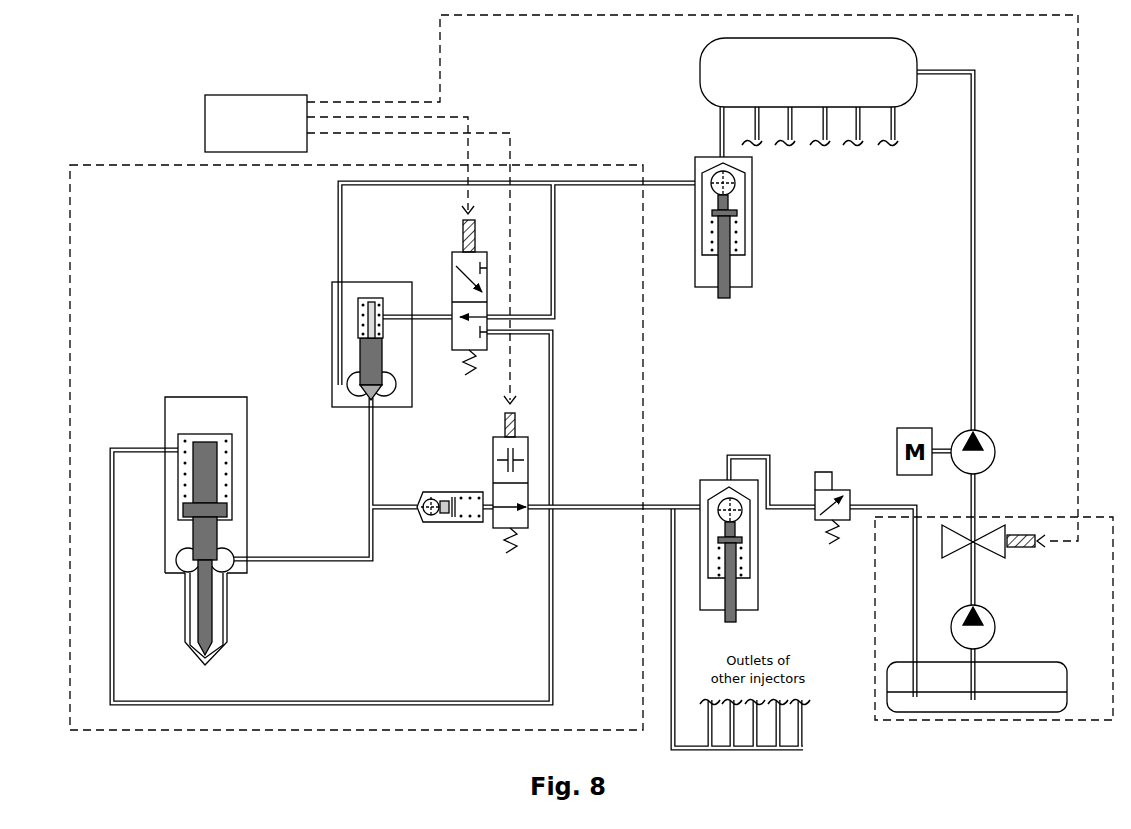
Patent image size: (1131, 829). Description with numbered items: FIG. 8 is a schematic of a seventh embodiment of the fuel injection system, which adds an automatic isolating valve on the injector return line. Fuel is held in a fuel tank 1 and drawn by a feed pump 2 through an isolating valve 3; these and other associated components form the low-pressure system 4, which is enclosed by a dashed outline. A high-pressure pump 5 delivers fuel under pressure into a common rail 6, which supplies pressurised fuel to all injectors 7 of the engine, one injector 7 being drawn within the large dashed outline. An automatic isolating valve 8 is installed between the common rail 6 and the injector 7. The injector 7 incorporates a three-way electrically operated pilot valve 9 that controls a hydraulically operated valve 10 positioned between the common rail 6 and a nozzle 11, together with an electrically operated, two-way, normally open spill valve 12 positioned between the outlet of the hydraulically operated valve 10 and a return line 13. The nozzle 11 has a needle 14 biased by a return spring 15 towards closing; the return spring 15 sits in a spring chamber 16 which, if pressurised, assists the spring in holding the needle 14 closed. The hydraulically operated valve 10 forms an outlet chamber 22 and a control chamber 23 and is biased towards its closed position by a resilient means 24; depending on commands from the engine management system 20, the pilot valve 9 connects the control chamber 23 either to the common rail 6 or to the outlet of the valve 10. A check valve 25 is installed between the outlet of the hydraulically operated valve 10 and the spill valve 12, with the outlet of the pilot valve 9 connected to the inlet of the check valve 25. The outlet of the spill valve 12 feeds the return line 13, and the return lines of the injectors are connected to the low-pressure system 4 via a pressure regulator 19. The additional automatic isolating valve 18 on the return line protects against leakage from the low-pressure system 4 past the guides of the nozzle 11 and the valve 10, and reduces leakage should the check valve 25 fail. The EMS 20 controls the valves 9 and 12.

The fuel tank 1 is at (977, 687).
The feed pump 2 is at (963, 627).
The isolating valve 3 is at (988, 550).
The low-pressure system 4 is at (994, 618).
The high-pressure pump 5 is at (982, 452).
The common rail 6 is at (808, 72).
The injector 7 is at (103, 250).
The automatic isolating valve 8 is at (733, 227).
The three-way electrically operated pilot valve 9 is at (473, 297).
The hydraulically operated valve 10 is at (320, 303).
The nozzle 11 is at (158, 400).
The spill valve 12 is at (498, 481).
The return line 13 is at (565, 500).
The needle 14 is at (203, 610).
The return spring 15 is at (230, 470).
The spring chamber 16 is at (184, 482).
The automatic isolating valve 18 is at (724, 536).
The pressure regulator 19 is at (825, 494).
The engine management system 20 is at (641, 281).
The outlet chamber 22 is at (388, 392).
The control chamber 23 is at (371, 299).
The resilient means 24 is at (381, 305).
The check valve 25 is at (440, 525).